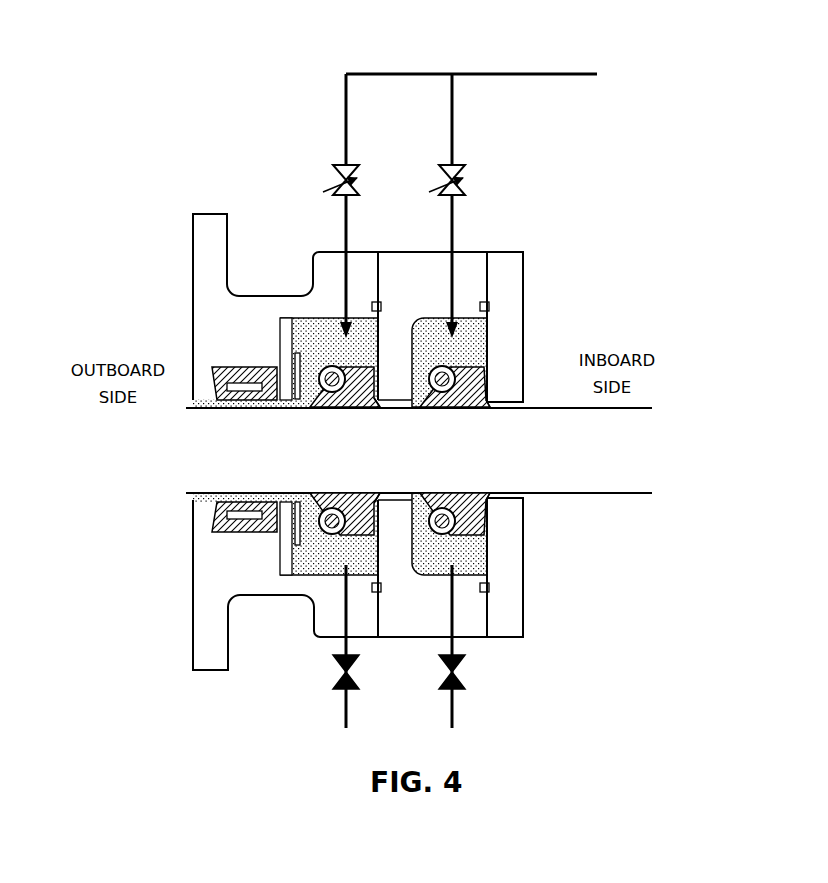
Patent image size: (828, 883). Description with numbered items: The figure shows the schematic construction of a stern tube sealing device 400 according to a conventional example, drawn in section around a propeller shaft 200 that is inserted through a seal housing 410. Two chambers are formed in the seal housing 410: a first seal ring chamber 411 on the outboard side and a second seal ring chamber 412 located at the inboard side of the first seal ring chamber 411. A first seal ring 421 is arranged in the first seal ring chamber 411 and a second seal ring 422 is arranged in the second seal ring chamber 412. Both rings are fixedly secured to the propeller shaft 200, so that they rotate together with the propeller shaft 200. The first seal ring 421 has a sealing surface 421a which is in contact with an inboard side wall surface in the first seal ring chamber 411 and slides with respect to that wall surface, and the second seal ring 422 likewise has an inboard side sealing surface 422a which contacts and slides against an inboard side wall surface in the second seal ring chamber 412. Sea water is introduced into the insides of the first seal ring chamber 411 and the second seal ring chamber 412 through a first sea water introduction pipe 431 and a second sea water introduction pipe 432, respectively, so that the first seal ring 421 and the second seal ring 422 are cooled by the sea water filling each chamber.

The stern tube sealing device 400 is at (156, 119).
The propeller shaft 200 is at (210, 465).
The seal housing 410 is at (203, 303).
The first seal ring chamber 411 is at (312, 328).
The second seal ring chamber 412 is at (453, 337).
The first seal ring 421 is at (336, 493).
The sealing surface 421a is at (386, 408).
The second seal ring 422 is at (448, 493).
The inboard side sealing surface 422a is at (494, 408).
The first sea water introduction pipe 431 is at (346, 128).
The second sea water introduction pipe 432 is at (452, 130).